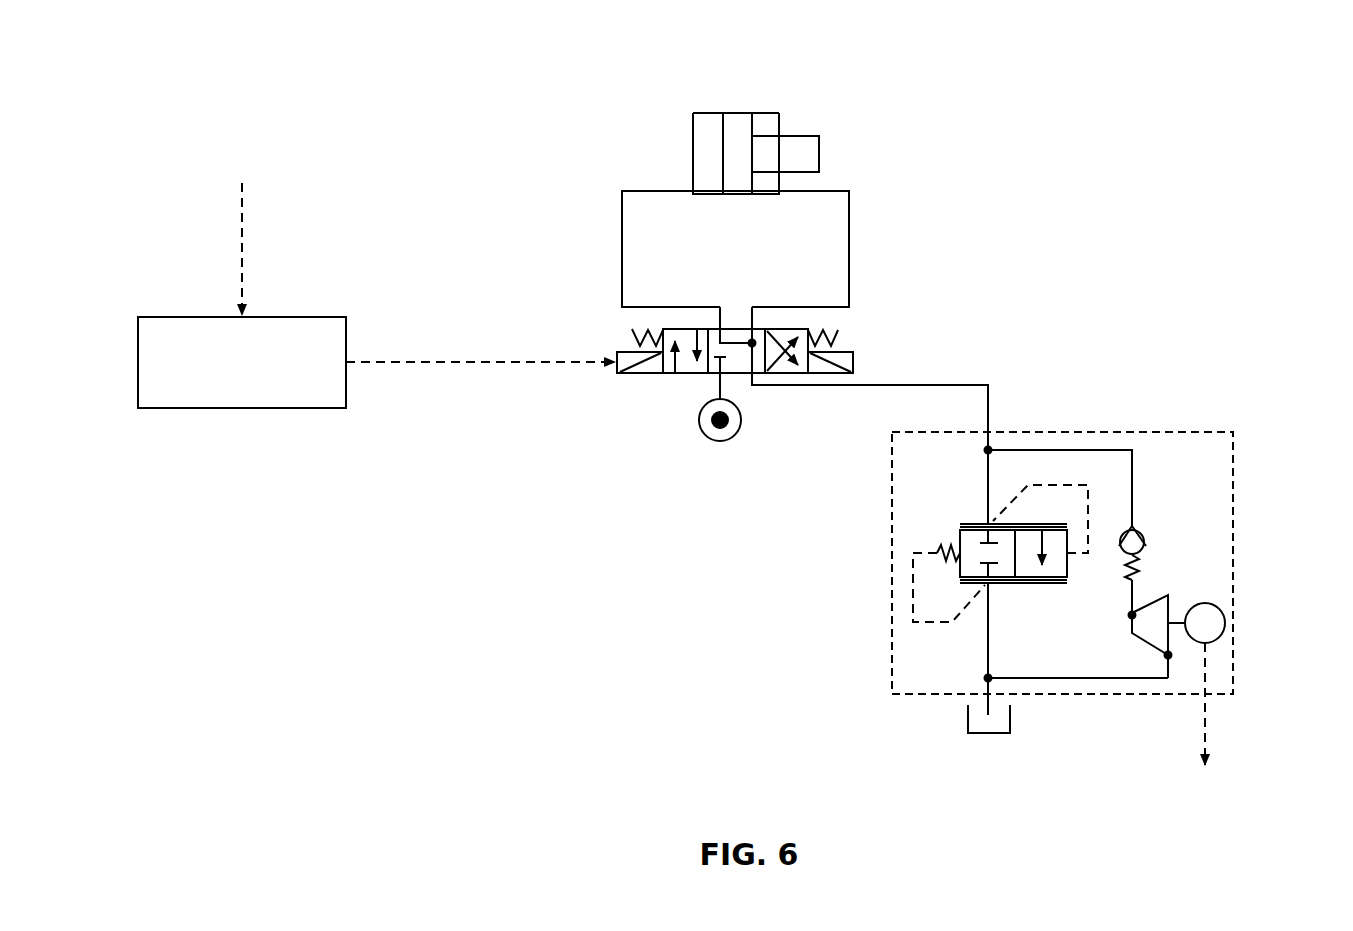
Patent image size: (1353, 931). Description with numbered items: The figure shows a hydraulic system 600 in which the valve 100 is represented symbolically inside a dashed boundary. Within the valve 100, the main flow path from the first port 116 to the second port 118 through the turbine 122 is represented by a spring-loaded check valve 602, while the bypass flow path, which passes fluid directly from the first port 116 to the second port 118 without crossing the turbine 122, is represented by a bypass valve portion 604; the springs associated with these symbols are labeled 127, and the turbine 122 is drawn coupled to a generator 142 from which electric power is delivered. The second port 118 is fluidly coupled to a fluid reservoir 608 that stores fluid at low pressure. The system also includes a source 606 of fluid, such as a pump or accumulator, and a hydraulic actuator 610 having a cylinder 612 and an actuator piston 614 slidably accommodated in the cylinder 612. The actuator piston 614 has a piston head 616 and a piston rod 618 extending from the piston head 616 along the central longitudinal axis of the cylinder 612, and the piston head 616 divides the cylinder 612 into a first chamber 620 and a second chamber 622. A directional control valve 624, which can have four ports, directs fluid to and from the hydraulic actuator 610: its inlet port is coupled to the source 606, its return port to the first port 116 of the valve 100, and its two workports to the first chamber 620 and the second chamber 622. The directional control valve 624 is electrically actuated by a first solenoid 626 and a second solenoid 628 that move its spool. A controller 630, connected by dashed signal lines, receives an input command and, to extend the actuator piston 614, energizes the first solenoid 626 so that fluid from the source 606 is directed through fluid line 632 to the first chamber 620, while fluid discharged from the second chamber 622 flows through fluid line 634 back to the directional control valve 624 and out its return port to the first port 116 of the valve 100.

The hydraulic system 600 is at (380, 120).
The controller 630 is at (242, 362).
The hydraulic actuator 610 is at (678, 105).
The cylinder 612 is at (693, 145).
The actuator piston 614 is at (721, 155).
The piston head 616 is at (738, 130).
The piston rod 618 is at (808, 135).
The first chamber 620 is at (711, 116).
The second chamber 622 is at (770, 116).
The fluid line 632 is at (622, 250).
The fluid line 634 is at (850, 220).
The directional control valve 624 is at (854, 331).
The first solenoid 626 is at (638, 374).
The second solenoid 628 is at (853, 362).
The source 606 is at (720, 441).
The valve 100 is at (1170, 425).
The first port 116 is at (993, 441).
The bypass valve portion 604 is at (949, 516).
The spring 127 is at (940, 547).
The spring-loaded check valve 602 is at (1145, 535).
The turbine 122 is at (1132, 628).
The generator 142 is at (1225, 620).
The second port 118 is at (981, 675).
The fluid reservoir 608 is at (1010, 718).